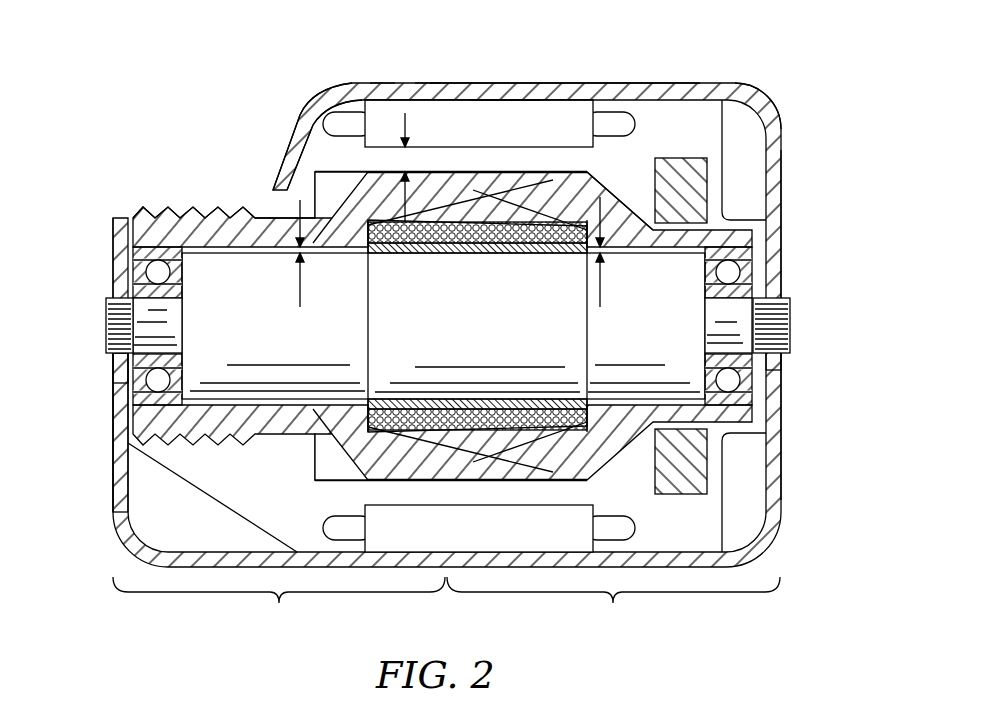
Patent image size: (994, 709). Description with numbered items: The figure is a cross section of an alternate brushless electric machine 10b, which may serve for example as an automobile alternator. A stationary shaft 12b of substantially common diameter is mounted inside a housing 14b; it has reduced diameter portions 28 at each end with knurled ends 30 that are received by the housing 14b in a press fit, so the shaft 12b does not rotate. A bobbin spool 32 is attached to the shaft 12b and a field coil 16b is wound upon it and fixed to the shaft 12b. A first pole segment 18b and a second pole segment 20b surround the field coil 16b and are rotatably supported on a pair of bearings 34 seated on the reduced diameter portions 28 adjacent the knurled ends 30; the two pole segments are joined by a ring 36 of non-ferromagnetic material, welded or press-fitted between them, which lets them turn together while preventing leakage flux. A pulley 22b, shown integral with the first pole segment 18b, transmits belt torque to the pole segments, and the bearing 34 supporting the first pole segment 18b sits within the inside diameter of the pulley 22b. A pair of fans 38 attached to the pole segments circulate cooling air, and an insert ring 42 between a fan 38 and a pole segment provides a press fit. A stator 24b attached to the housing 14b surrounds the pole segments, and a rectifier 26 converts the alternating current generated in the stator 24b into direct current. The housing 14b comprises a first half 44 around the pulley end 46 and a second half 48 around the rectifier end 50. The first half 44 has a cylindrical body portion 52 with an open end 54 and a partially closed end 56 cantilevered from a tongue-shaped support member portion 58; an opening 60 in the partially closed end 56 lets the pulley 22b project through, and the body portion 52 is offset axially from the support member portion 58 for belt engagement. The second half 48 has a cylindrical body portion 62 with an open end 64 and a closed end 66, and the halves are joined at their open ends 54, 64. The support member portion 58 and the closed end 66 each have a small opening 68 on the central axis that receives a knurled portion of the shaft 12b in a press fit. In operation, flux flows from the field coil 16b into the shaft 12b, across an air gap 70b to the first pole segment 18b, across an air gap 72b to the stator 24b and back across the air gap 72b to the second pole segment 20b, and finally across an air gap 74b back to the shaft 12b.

The brushless electric machine 10b is at (136, 39).
The stationary shaft 12b is at (170, 380).
The housing 14b is at (447, 86).
The field coil 16b is at (423, 420).
The first pole segment 18b is at (328, 110).
The second pole segment 20b is at (607, 205).
The pulley 22b is at (170, 213).
The stator 24b is at (557, 110).
The rectifier 26 is at (748, 495).
The reduced diameter portions 28 is at (150, 310).
The knurled ends 30 is at (110, 323).
The bobbin spool 32 is at (370, 417).
The bearings 34 is at (140, 260).
The ring 36 is at (483, 203).
The fans 38 is at (320, 182).
The insert ring 42 is at (687, 223).
The first half 44 is at (348, 82).
The pulley end 46 is at (279, 607).
The second half 48 is at (603, 85).
The rectifier end 50 is at (613, 607).
The body portion 52 is at (382, 85).
The open end 54 is at (428, 84).
The partially closed end 56 is at (293, 132).
The support member portion 58 is at (117, 420).
The opening 60 is at (273, 198).
The body portion 62 is at (680, 85).
The open end 64 is at (505, 86).
The closed end 66 is at (773, 215).
The small opening 68 is at (117, 370).
The air gap 70b is at (300, 290).
The air gap 72b is at (408, 125).
The air gap 74b is at (600, 295).